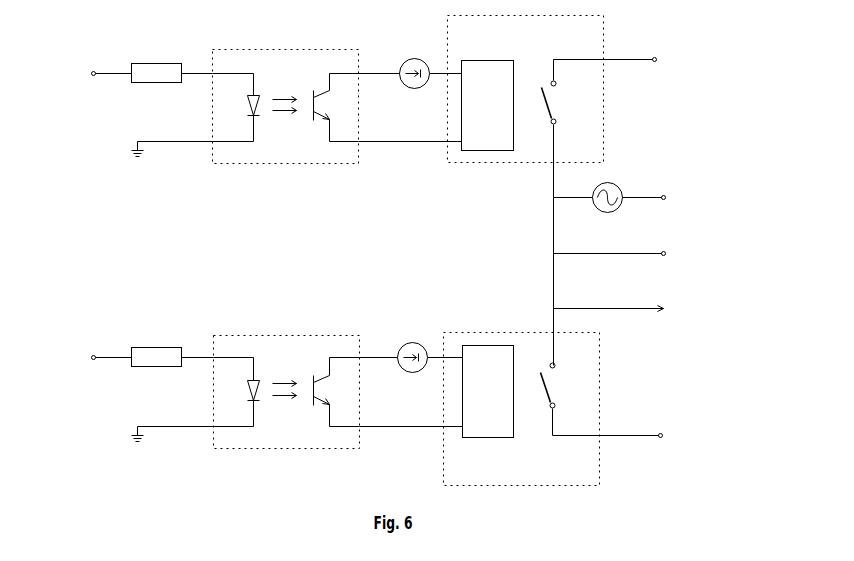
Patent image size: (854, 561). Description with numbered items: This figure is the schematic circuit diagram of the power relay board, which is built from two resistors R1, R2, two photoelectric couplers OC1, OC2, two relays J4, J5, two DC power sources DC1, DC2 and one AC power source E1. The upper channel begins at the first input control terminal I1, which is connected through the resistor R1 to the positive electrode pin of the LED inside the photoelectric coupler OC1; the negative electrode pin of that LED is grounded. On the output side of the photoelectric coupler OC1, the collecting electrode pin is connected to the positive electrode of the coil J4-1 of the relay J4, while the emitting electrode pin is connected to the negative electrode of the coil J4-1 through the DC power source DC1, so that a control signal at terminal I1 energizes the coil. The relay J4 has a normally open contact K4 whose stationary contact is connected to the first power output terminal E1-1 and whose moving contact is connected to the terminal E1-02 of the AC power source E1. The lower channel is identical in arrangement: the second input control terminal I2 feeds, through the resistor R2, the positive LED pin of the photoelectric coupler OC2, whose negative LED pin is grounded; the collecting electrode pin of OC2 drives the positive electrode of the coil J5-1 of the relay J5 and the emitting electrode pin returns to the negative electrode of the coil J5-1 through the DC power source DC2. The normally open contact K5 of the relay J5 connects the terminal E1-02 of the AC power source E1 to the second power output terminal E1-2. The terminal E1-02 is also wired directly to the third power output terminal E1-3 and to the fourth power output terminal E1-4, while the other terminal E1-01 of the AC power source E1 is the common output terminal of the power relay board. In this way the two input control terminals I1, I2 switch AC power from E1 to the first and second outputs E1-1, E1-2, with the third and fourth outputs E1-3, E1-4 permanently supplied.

The first input control terminal I1 is at (103, 64).
The second input control terminal I2 is at (103, 345).
The resistor R1 is at (172, 61).
The resistor R2 is at (173, 345).
The photoelectric coupler OC1 is at (245, 107).
The photoelectric coupler OC2 is at (246, 392).
The DC power source DC1 is at (410, 100).
The DC power source DC2 is at (411, 385).
The relay J4 is at (526, 107).
The coil of relay J4 J4-1 is at (488, 106).
The normally open contact of relay J4 K4 is at (564, 129).
The relay J5 is at (522, 409).
The coil of relay J5 J5-1 is at (488, 392).
The normally open contact of relay J5 K5 is at (563, 399).
The AC power source E1 is at (608, 207).
The first power output terminal E1-1 is at (631, 63).
The second power output terminal E1-2 is at (632, 434).
The third power output terminal E1-3 is at (632, 282).
The fourth power output terminal E1-4 is at (632, 310).
The terminal of AC power source / common output terminal E1-01 is at (669, 193).
The terminal of AC power source E1-02 is at (544, 195).